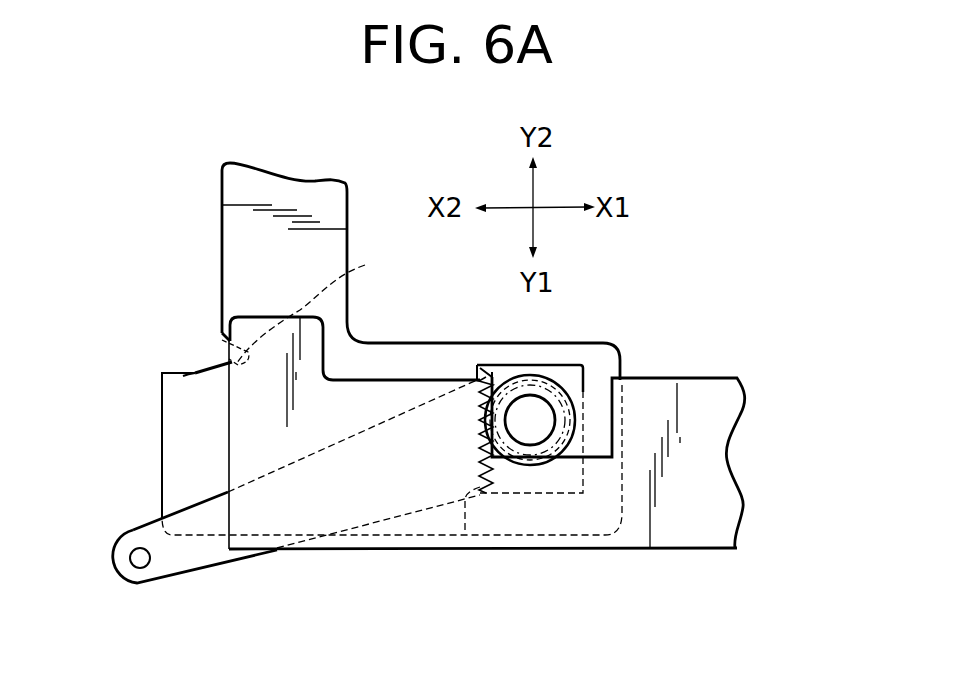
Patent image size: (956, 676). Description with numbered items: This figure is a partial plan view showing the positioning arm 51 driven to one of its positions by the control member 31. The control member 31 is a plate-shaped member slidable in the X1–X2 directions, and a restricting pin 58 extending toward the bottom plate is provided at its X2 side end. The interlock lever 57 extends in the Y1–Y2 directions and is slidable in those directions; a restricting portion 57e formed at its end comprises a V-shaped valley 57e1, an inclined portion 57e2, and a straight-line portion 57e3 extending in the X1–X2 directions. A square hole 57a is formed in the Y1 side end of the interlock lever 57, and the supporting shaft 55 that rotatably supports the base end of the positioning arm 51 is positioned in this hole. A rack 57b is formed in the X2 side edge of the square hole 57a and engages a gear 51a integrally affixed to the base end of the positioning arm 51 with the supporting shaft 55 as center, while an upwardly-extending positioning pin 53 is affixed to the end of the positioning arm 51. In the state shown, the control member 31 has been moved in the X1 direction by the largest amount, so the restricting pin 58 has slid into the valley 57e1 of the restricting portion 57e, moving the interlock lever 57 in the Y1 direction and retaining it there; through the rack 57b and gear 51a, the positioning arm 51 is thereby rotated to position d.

The interlock lever 57 is at (240, 233).
The restricting pin 58 is at (222, 340).
The restricting portion 57e is at (193, 357).
The V-shaped valley 57e1 is at (337, 309).
The inclined portion 57e2 is at (215, 374).
The straight-line portion 57e3 is at (183, 376).
The positioning arm 51 is at (220, 556).
The gear 51a is at (497, 360).
The positioning pin 53 is at (137, 568).
The supporting shaft 55 is at (537, 410).
The square hole 57a is at (568, 497).
The rack 57b is at (468, 490).
The control member 31 is at (682, 522).
The position d is at (170, 567).